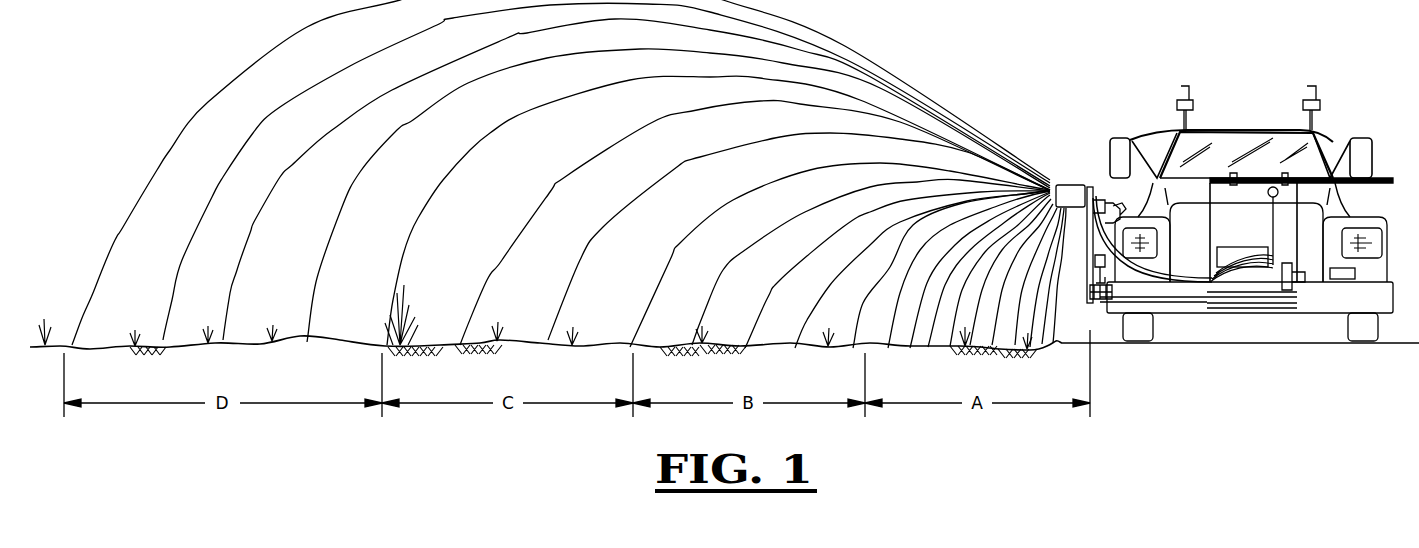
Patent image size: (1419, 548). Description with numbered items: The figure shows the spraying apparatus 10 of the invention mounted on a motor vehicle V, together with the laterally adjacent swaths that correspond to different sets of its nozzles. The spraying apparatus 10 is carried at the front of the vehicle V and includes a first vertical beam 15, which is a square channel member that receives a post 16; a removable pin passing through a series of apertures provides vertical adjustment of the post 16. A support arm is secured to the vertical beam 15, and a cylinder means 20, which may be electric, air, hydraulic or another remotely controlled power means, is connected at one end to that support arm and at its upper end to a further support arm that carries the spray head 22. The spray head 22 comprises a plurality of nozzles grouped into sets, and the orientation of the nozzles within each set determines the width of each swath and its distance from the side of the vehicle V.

The motor vehicle V is at (1254, 89).
The spraying apparatus 10 is at (1073, 139).
The spray head 22 is at (1068, 185).
The post 16 is at (1087, 250).
The first vertical beam 15 is at (1088, 286).
The cylinder means 20 is at (1100, 303).